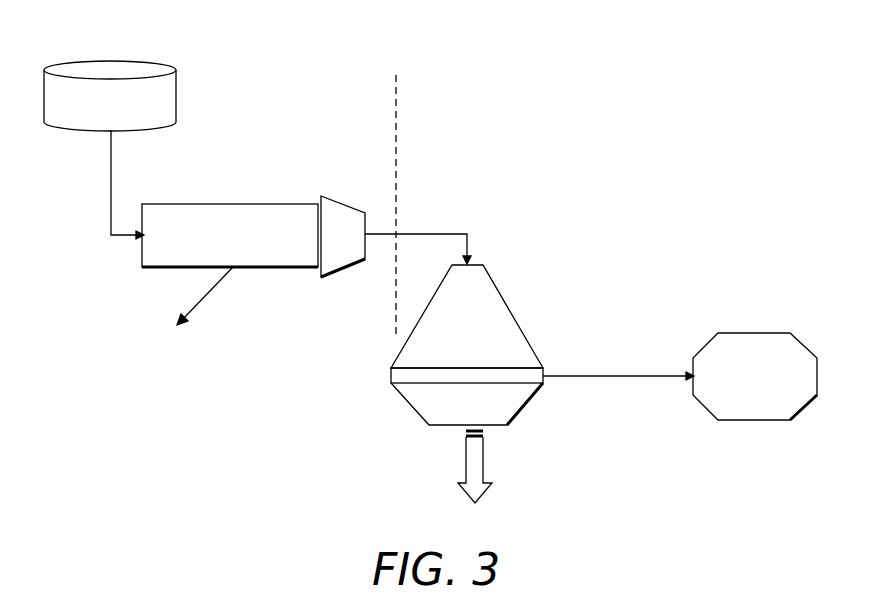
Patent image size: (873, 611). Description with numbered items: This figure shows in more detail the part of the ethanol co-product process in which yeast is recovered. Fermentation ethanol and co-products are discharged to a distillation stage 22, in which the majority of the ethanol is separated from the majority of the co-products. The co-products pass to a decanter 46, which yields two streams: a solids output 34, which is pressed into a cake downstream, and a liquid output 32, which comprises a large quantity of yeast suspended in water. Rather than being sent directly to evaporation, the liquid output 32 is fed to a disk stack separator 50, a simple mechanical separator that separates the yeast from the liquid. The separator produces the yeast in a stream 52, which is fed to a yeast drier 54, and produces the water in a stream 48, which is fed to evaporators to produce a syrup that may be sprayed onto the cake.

The distillation stage 22 is at (176, 70).
The decanter 46 is at (237, 204).
The solids output 34 is at (208, 295).
The liquid output 32 is at (425, 234).
The disk stack separator 50 is at (510, 308).
The water stream 48 is at (485, 472).
The yeast stream 52 is at (610, 376).
The yeast drier 54 is at (757, 333).